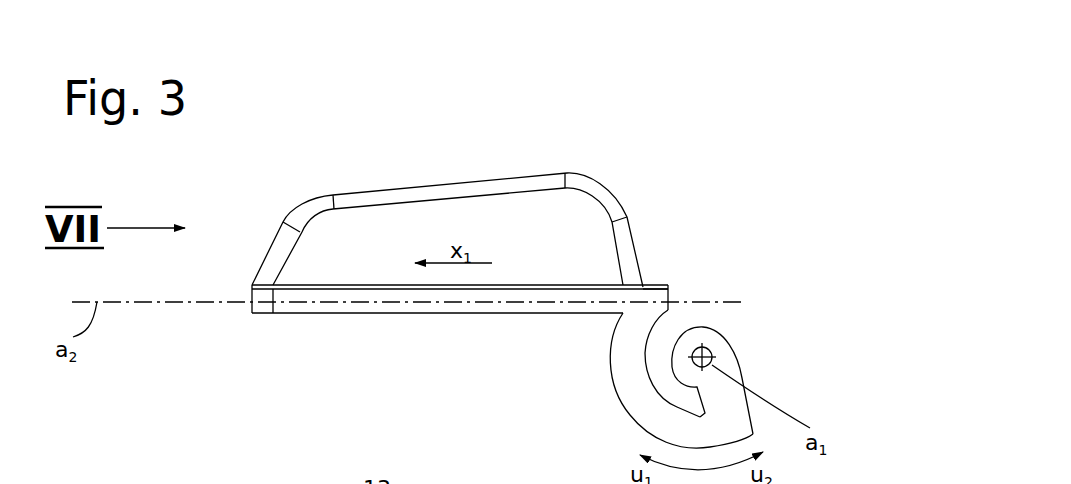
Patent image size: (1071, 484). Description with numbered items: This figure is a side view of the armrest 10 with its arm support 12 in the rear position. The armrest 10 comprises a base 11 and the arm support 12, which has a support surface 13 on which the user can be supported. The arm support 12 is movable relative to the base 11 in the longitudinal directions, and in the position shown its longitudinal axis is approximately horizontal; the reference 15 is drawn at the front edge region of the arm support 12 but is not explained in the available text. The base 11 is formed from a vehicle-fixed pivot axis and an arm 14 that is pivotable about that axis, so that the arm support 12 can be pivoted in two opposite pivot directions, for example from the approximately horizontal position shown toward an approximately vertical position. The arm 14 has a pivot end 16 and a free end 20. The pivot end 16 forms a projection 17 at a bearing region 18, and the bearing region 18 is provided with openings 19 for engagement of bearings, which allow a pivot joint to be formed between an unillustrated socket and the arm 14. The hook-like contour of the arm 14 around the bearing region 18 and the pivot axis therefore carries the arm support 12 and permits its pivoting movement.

The armrest 10 is at (637, 148).
The base 11 is at (597, 356).
The arm support 12 is at (527, 190).
The support surface 13 is at (460, 182).
The arm 14 is at (502, 302).
The front edge portion 15 is at (362, 200).
The pivot end 16 is at (679, 292).
The projection 17 is at (665, 423).
The bearing region 18 is at (748, 348).
The openings 19 is at (709, 350).
The free end 20 is at (247, 315).